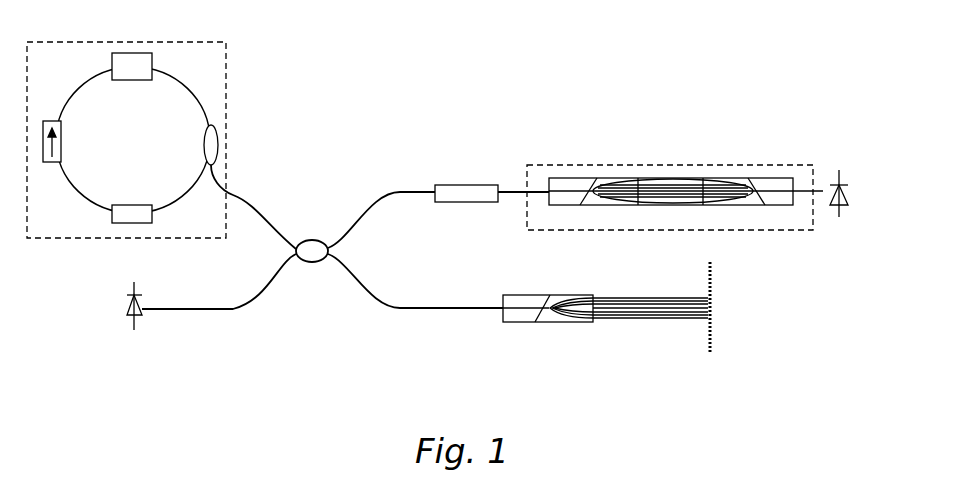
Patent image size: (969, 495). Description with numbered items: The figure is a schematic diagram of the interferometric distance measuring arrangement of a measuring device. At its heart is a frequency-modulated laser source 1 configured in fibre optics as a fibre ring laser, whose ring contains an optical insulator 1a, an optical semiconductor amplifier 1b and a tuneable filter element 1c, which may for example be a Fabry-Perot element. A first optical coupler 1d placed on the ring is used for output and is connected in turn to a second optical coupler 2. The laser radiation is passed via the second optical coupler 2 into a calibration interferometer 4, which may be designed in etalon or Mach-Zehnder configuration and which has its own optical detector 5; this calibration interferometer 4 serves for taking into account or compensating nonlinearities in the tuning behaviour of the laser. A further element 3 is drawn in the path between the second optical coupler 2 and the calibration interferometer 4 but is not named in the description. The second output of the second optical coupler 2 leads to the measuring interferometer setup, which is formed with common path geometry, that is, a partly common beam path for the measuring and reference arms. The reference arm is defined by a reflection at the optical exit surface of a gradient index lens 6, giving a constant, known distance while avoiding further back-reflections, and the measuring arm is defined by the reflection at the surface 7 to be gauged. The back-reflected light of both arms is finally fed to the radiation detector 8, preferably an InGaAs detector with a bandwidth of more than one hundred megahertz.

The frequency-modulated laser source 1 is at (227, 60).
The optical insulator 1a is at (57, 142).
The optical semiconductor amplifier 1b is at (133, 65).
The tuneable filter element 1c is at (123, 213).
The first optical coupler 1d is at (213, 143).
The second optical coupler 2 is at (317, 246).
The polarization controller 3 is at (465, 190).
The calibration interferometer 4 is at (653, 163).
The optical detector 5 is at (839, 170).
The gradient index lens 6 is at (533, 298).
The surface 7 is at (707, 333).
The radiation detector 8 is at (138, 315).